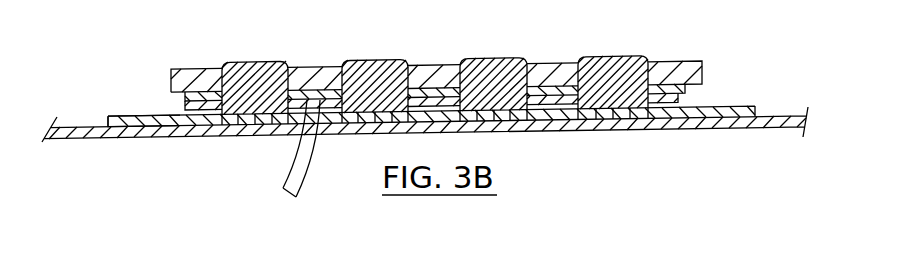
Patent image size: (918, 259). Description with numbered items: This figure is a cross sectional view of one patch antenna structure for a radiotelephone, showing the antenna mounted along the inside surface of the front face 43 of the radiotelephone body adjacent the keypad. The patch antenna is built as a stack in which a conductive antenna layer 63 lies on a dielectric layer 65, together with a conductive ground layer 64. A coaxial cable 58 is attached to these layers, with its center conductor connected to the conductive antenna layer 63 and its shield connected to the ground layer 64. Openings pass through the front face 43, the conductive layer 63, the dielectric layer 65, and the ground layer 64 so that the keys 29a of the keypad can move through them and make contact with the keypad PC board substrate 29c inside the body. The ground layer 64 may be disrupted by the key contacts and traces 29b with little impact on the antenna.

The keys 29a is at (251, 62).
The key contacts 29b is at (255, 123).
The PC board substrate 29c is at (633, 132).
The front face 43 is at (671, 61).
The coaxial cable 58 is at (291, 181).
The conductive antenna layer 63 is at (685, 92).
The conductive ground layer 64 is at (108, 122).
The dielectric layer 65 is at (184, 110).